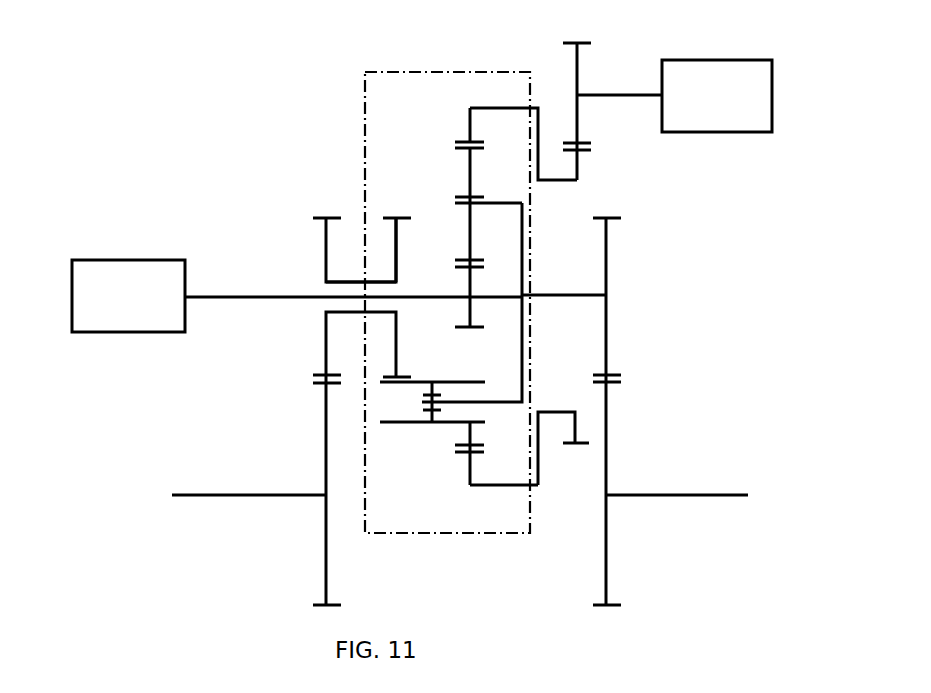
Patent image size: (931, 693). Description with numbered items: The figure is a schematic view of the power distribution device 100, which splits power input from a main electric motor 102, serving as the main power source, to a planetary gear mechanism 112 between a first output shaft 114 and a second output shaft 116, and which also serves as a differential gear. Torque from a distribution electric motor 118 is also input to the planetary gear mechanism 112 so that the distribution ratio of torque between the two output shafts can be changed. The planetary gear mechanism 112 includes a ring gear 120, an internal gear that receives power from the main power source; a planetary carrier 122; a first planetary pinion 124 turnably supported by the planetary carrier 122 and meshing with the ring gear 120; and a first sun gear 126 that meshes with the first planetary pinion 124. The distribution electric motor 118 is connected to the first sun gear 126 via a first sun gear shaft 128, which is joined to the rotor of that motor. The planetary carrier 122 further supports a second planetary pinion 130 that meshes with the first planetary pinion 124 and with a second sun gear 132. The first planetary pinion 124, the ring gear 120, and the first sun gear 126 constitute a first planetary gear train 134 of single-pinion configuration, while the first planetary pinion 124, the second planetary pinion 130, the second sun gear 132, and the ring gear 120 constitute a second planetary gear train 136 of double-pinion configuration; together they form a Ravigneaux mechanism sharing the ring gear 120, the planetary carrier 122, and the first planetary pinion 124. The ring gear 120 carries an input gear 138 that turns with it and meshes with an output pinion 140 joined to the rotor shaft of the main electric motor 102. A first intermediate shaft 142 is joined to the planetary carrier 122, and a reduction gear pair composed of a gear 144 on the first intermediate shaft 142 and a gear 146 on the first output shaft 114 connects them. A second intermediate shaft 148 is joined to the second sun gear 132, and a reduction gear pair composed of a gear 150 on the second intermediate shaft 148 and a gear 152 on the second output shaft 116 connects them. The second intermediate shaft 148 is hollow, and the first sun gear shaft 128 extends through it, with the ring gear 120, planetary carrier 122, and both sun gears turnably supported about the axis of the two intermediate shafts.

The power distribution device 100 is at (222, 112).
The main electric motor 102 is at (733, 133).
The planetary gear mechanism 112 is at (362, 90).
The first output shaft 114 is at (679, 495).
The second output shaft 116 is at (207, 495).
The distribution electric motor 118 is at (130, 260).
The ring gear 120 is at (487, 108).
The planetary carrier 122 is at (525, 228).
The first planetary pinion 124 is at (467, 163).
The first sun gear 126 is at (465, 318).
The first sun gear shaft 128 is at (215, 297).
The second planetary pinion 130 is at (400, 425).
The second sun gear 132 is at (398, 238).
The first planetary gear train 134 is at (452, 104).
The second planetary gear train 136 is at (438, 458).
The input gear 138 is at (580, 157).
The output pinion 140 is at (580, 62).
The first intermediate shaft 142 is at (556, 295).
The gear 144 is at (607, 248).
The gear 146 is at (607, 407).
The second intermediate shaft 148 is at (350, 282).
The gear 150 is at (326, 240).
The gear 152 is at (326, 416).